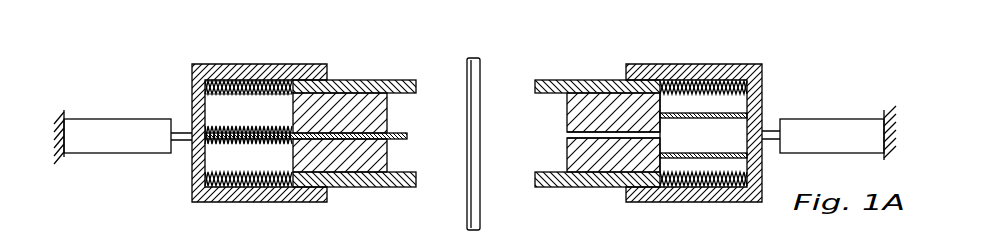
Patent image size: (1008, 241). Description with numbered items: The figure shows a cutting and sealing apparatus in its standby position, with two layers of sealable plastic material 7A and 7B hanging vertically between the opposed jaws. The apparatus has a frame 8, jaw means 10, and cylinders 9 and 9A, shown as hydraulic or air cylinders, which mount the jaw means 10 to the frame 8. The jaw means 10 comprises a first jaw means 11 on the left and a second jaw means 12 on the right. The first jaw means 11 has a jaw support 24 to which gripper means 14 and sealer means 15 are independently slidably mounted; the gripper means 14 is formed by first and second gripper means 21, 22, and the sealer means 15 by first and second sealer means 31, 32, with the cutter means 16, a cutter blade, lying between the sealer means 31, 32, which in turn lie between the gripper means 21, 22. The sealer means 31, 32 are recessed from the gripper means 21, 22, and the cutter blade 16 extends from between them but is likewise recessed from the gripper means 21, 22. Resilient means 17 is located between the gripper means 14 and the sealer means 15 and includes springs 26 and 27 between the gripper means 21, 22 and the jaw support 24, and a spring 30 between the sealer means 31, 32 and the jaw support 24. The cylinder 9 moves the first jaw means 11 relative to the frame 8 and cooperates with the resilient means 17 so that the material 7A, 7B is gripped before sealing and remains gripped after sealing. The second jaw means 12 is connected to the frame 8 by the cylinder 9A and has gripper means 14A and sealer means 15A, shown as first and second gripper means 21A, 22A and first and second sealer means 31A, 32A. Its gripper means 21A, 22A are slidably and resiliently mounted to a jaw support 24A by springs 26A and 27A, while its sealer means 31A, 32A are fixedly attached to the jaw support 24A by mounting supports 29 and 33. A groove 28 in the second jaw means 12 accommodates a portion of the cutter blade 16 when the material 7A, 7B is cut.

The sealable material 7A is at (467, 62).
The sealable material 7B is at (482, 66).
The frame 8 is at (65, 111).
The cylinder 9 is at (113, 119).
The cylinder 9A is at (800, 119).
The jaw means 10 is at (427, 48).
The first jaw means 11 is at (352, 70).
The second jaw means 12 is at (598, 74).
The gripper means 14 is at (462, 107).
The gripper means 14A is at (521, 107).
The sealer means 15 is at (462, 194).
The sealer means 15A is at (521, 194).
The cutter means 16 is at (408, 136).
The resilient means 17 is at (239, 122).
The first gripper means 21 is at (417, 87).
The first gripper means 21A is at (537, 85).
The second gripper means 22 is at (417, 188).
The second gripper means 22A is at (538, 188).
The jaw support 24 is at (232, 64).
The jaw support 24A is at (705, 64).
The spring 26 is at (288, 94).
The spring 26A is at (698, 80).
The spring 27 is at (248, 172).
The spring 27A is at (698, 188).
The groove 28 is at (571, 140).
The mounting support 29 is at (715, 119).
The spring 30 is at (246, 147).
The first sealer means 31 is at (388, 109).
The first sealer means 31A is at (567, 112).
The second sealer means 32 is at (388, 158).
The second sealer means 32A is at (567, 152).
The mounting support 33 is at (698, 152).